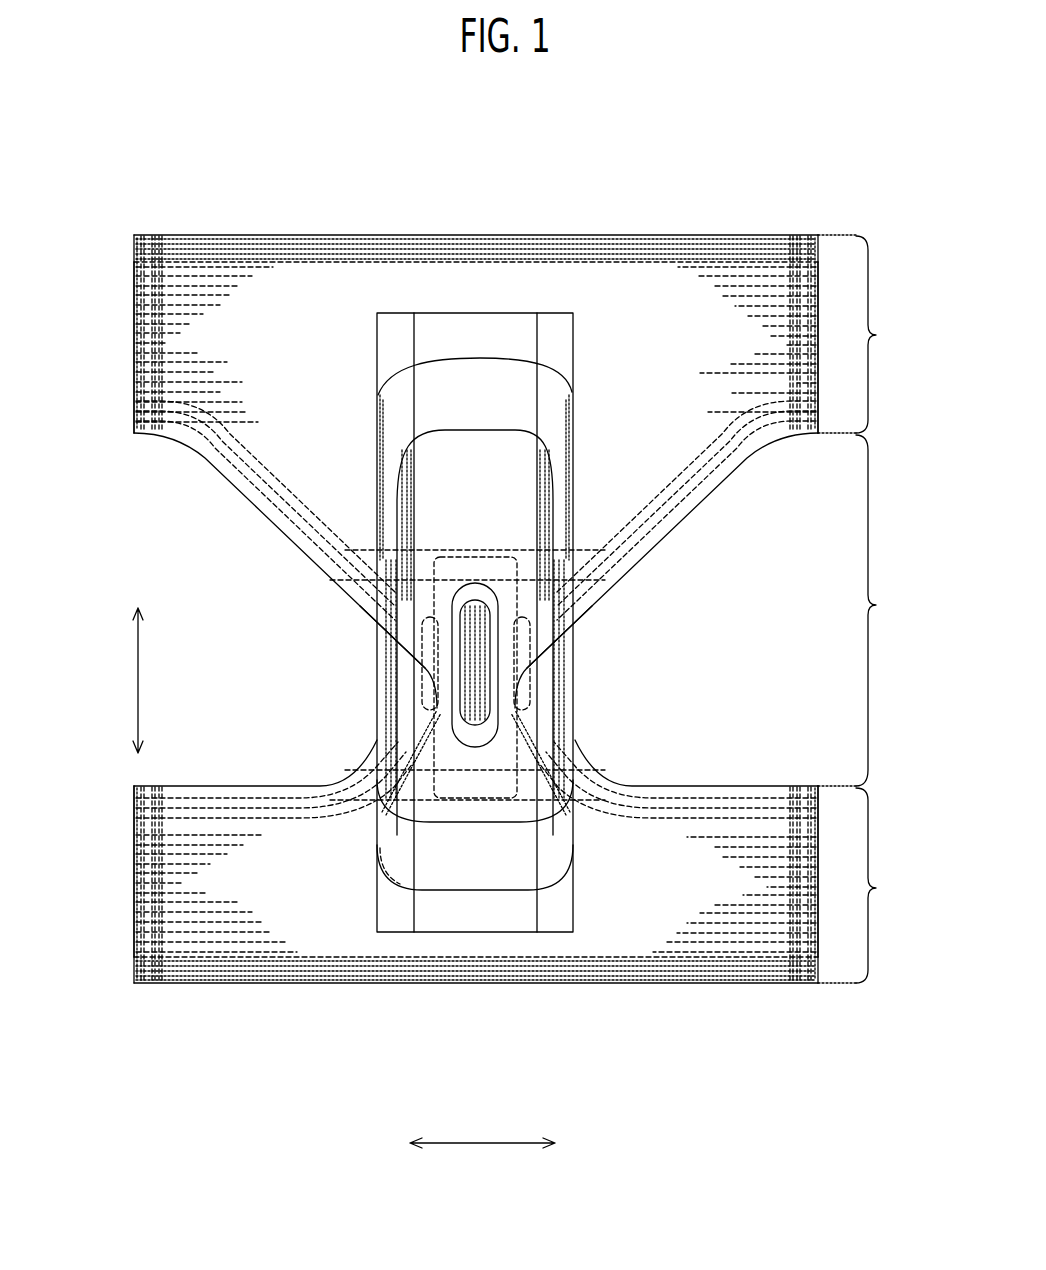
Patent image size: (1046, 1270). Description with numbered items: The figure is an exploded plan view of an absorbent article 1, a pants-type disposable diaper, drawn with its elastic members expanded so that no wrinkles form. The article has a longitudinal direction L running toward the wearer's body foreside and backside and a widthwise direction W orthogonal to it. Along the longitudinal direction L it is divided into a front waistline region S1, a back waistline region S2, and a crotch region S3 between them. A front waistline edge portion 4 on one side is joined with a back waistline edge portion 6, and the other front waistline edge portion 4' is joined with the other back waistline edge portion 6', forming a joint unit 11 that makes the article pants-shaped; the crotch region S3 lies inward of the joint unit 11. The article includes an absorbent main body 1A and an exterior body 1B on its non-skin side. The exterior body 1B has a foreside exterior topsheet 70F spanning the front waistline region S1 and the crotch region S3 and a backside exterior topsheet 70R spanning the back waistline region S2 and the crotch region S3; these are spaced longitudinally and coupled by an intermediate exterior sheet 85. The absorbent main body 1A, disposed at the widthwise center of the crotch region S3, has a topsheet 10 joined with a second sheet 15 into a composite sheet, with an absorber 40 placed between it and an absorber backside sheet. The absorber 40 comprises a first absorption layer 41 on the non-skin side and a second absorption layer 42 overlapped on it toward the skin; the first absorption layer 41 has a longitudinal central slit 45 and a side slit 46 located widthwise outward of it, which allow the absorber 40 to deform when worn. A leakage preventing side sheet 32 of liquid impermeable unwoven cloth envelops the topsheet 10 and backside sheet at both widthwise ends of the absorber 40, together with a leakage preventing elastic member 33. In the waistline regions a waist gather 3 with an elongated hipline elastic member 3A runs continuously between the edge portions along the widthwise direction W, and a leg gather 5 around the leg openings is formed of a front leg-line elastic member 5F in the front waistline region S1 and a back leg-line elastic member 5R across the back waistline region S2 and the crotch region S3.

The absorbent article 1 is at (736, 200).
The absorbent main body 1A is at (395, 235).
The exterior body 1B is at (713, 1000).
The waist gather 3 is at (232, 235).
The hipline elastic member 3A is at (310, 235).
The front waistline edge portion 4 is at (108, 871).
The front waistline edge portion 4' is at (838, 871).
The leg gather 5 is at (725, 470).
The back leg-line elastic member 5R is at (722, 490).
The front leg-line elastic member 5F is at (718, 786).
The back waistline edge portion 6 is at (108, 347).
The back waistline edge portion 6' is at (838, 347).
The topsheet 10 is at (437, 917).
The joint unit 11 is at (150, 235).
The second sheet 15 is at (585, 740).
The leakage preventing side sheet 32 is at (558, 440).
The leakage preventing elastic member 33 is at (547, 460).
The absorber 40 is at (547, 893).
The first absorption layer 41 is at (489, 823).
The second absorption layer 42 is at (379, 885).
The central slit 45 is at (380, 618).
The side slit 46 is at (395, 655).
The backside exterior topsheet 70R is at (615, 278).
The foreside exterior topsheet 70F is at (617, 905).
The intermediate exterior sheet 85 is at (360, 590).
The front waistline region S1 is at (886, 885).
The back waistline region S2 is at (886, 334).
The crotch region S3 is at (886, 610).
The longitudinal direction L is at (122, 680).
The widthwise direction W is at (482, 1157).